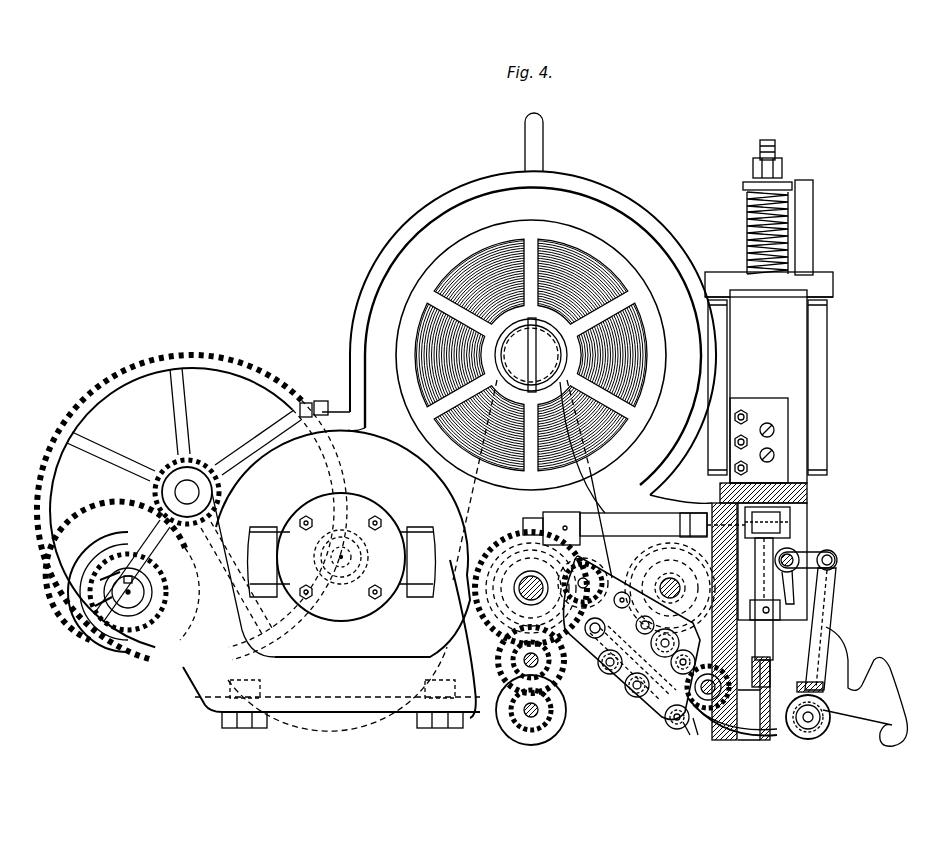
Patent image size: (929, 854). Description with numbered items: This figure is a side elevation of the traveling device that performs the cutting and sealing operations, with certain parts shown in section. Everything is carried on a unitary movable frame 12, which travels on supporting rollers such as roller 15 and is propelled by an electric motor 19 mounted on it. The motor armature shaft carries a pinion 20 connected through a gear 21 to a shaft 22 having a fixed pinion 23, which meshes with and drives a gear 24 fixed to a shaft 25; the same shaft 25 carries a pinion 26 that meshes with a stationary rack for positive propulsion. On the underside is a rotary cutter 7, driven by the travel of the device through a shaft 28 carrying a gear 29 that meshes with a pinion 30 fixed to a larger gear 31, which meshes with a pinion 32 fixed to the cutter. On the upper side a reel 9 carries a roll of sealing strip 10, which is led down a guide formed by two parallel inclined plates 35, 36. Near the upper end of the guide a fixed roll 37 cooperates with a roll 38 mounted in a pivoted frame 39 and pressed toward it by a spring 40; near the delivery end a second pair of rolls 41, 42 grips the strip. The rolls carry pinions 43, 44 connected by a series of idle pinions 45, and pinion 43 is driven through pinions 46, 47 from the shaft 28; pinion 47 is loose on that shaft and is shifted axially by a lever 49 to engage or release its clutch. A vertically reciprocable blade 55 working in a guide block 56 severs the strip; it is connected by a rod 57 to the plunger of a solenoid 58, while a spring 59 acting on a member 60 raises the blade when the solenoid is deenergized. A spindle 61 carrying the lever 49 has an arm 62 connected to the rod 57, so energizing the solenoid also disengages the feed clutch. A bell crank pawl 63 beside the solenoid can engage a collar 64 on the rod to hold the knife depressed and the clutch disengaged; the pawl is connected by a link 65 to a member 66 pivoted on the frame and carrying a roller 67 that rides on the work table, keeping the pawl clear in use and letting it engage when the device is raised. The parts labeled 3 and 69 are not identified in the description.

The housing 3 is at (648, 236).
The reel 9 is at (408, 320).
The sealing strip 10 is at (420, 337).
The gear 21 is at (258, 375).
The shaft 22 is at (190, 490).
The pinion 23 is at (168, 462).
The gear 24 is at (112, 520).
The shaft 25 is at (126, 592).
The pinion 26 is at (118, 620).
The supporting roller 15 is at (112, 640).
The electric motor 19 is at (343, 580).
The pinion 20 is at (368, 556).
The bolts 69 is at (375, 605).
The unitary frame 12 is at (365, 712).
The lever 49 is at (525, 518).
The gear 29 is at (513, 537).
The shaft 28 is at (525, 594).
The larger gear 31 is at (494, 650).
The pinion 30 is at (510, 665).
The pinion 32 is at (510, 715).
The rotary cutter 7 is at (542, 754).
The pinion 47 is at (570, 603).
The roll 38 is at (598, 660).
The spring 40 is at (600, 680).
The pivoted frame 39 is at (600, 688).
The pinion 46 is at (586, 566).
The pinion 43 is at (608, 572).
The roll 37 is at (628, 565).
The idle pinions 45 is at (665, 722).
The roll 42 is at (688, 735).
The pinion 44 is at (696, 737).
The inclined plate 35 is at (712, 738).
The inclined plate 36 is at (724, 740).
The roll 41 is at (712, 668).
The spindle 61 is at (660, 520).
The member 60 is at (743, 186).
The spring 59 is at (745, 228).
The solenoid 58 is at (815, 395).
The arm 62 is at (792, 532).
The bell crank pawl 63 is at (830, 555).
The collar 64 is at (828, 596).
The link 65 is at (826, 630).
The rod 57 is at (775, 628).
The blade 55 is at (772, 680).
The guide block 56 is at (772, 740).
The member 66 is at (798, 733).
The roller 67 is at (830, 730).